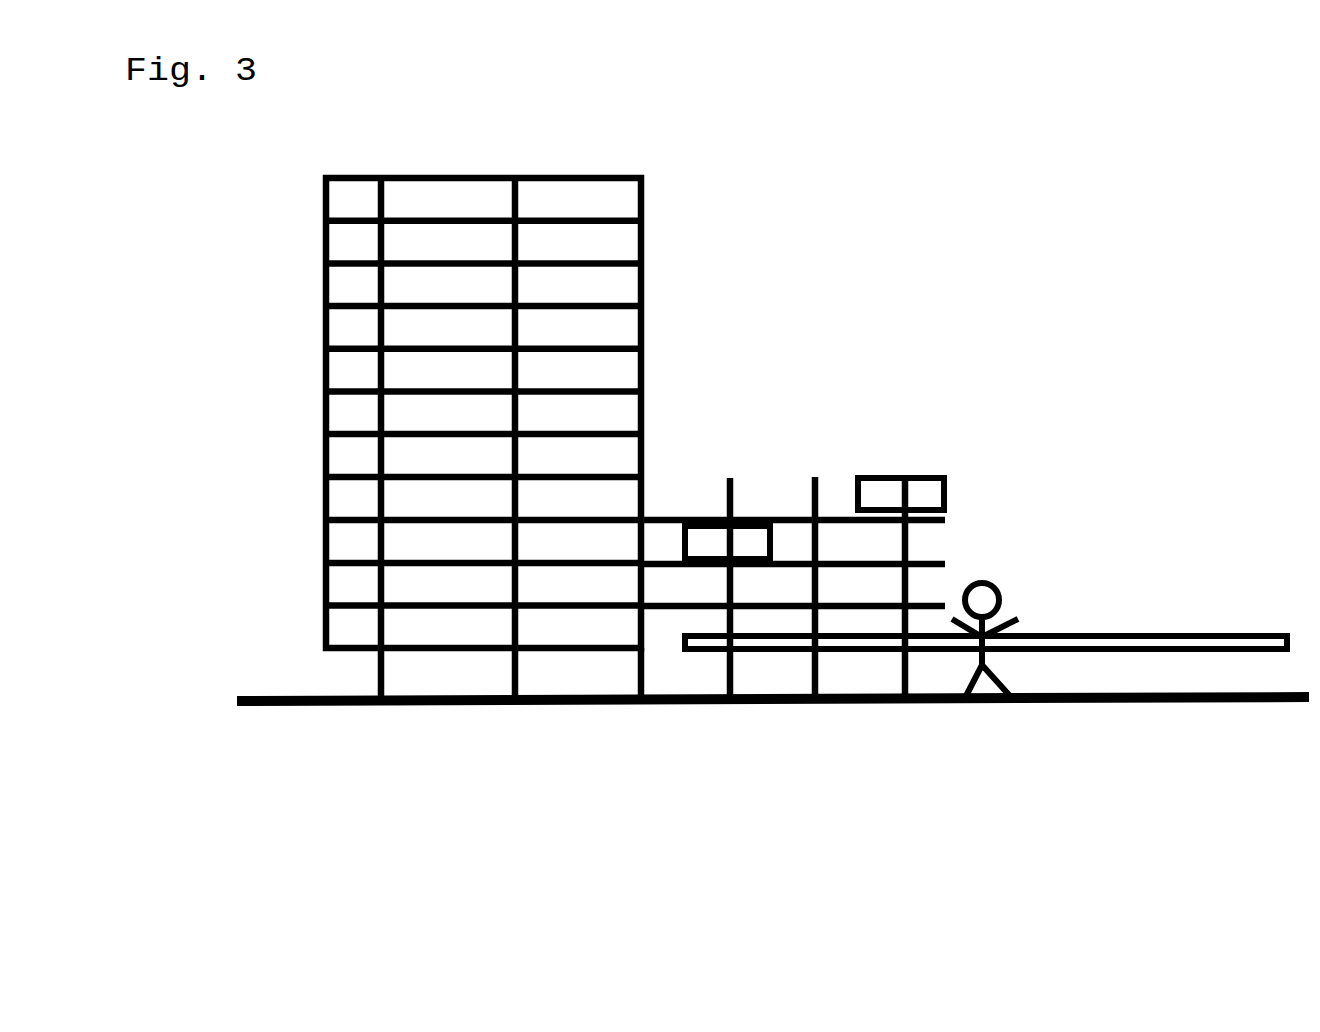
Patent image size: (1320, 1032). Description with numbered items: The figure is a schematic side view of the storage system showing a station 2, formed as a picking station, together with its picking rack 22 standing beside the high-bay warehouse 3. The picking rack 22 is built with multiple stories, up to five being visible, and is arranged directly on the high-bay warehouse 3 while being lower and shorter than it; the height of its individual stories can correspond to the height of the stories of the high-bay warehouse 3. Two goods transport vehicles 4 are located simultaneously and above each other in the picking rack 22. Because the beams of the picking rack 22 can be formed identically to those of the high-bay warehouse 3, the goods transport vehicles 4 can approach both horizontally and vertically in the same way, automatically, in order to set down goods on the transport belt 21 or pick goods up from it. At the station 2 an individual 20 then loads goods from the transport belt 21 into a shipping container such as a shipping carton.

The station 2 is at (998, 317).
The high-bay warehouse 3 is at (250, 360).
The goods transport vehicle 4 is at (814, 432).
The individual 20 is at (995, 582).
The transport belt 21 is at (1108, 632).
The picking rack 22 is at (812, 668).